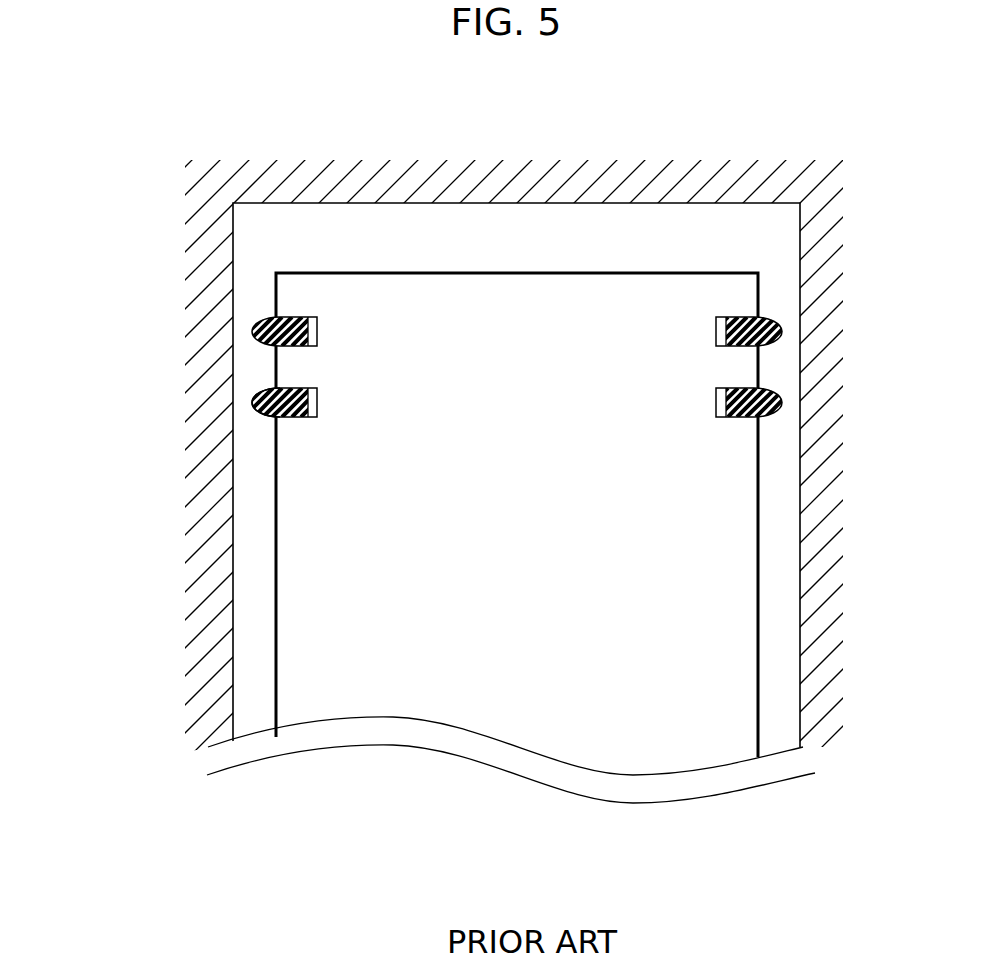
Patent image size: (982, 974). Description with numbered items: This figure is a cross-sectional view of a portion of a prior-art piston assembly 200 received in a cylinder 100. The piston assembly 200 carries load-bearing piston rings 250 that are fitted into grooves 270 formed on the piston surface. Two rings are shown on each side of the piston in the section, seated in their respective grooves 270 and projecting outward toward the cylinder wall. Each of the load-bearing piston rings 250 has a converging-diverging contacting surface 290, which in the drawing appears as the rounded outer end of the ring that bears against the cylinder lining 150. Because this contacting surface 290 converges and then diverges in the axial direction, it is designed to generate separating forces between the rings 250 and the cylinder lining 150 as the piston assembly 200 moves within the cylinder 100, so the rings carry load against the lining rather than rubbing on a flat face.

The cylinder 100 is at (203, 234).
The cylinder lining 150 is at (232, 305).
The piston assembly 200 is at (490, 273).
The load-bearing piston rings 250 is at (275, 339).
The grooves 270 is at (322, 411).
The converging-diverging contacting surface 290 is at (252, 407).